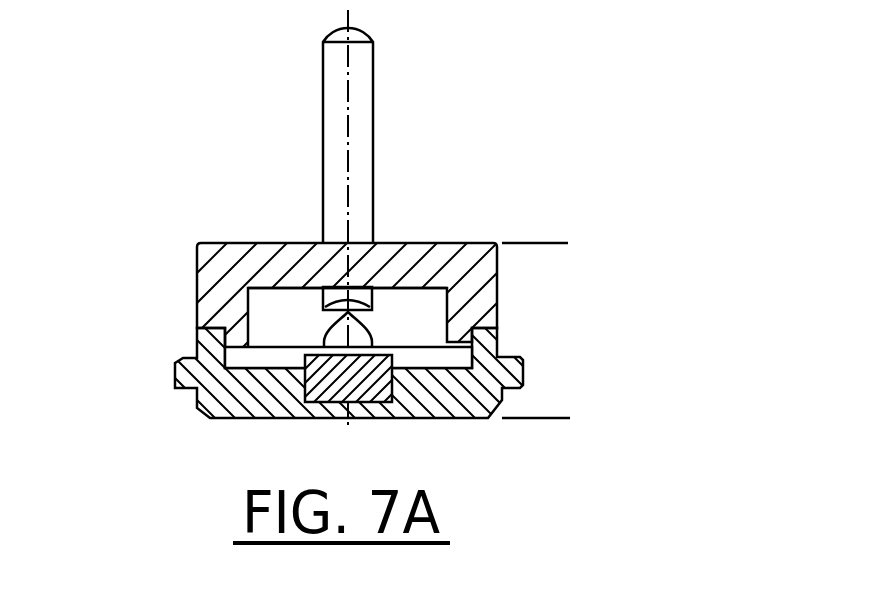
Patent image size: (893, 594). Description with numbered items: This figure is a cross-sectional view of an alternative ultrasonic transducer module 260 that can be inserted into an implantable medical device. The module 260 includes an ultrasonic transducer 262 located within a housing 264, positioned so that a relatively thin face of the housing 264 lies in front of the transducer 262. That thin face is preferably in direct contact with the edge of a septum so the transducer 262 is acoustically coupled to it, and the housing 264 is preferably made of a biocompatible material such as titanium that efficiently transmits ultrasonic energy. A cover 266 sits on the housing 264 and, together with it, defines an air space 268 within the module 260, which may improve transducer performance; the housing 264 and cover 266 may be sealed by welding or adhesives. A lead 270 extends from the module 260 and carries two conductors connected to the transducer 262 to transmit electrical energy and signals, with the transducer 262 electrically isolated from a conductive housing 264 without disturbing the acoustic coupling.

The ultrasonic transducer module 260 is at (625, 298).
The ultrasonic transducer 262 is at (387, 345).
The housing 264 is at (198, 410).
The cover 266 is at (197, 297).
The air space 268 is at (277, 318).
The lead 270 is at (320, 115).